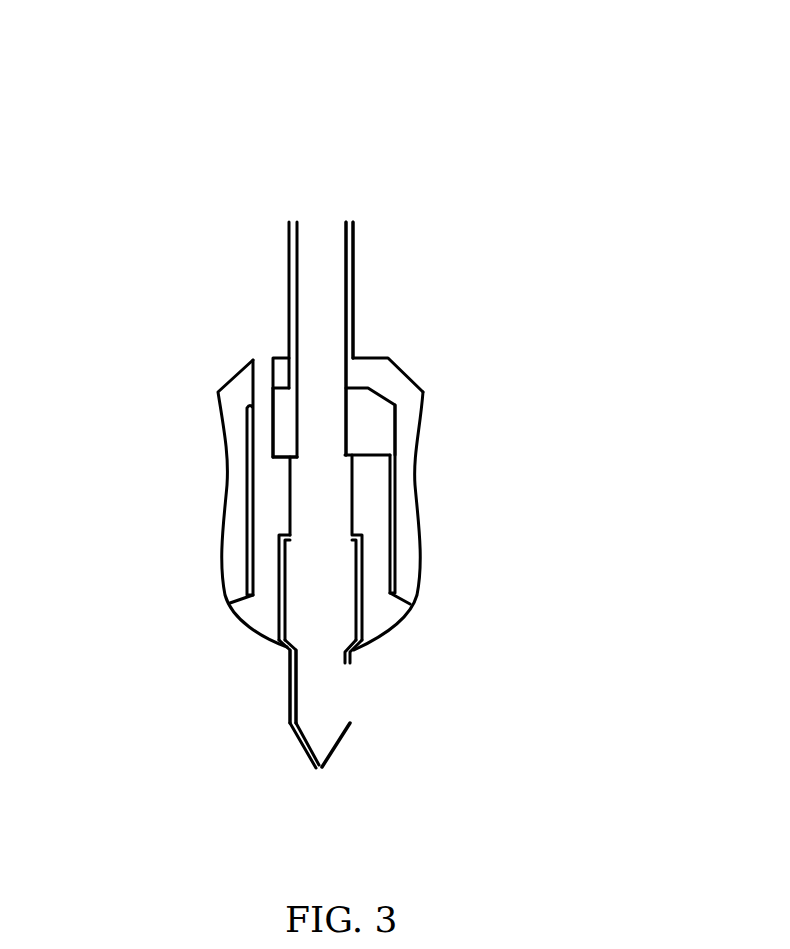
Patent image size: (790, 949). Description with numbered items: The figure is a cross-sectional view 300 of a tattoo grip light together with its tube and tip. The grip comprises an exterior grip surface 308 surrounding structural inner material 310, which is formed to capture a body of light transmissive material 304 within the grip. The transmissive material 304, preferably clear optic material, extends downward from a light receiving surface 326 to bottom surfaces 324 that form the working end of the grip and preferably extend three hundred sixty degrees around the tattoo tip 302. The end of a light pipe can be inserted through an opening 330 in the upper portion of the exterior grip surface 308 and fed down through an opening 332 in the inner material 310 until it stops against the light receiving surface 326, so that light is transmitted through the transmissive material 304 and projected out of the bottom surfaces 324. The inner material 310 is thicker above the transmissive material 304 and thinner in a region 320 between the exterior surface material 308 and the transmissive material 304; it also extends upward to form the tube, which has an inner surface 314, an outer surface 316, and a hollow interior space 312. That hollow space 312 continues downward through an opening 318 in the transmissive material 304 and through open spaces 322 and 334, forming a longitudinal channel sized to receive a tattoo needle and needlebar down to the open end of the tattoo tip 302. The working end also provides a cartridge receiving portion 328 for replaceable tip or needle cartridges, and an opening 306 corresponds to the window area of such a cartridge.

The cross-sectional view 300 is at (493, 137).
The tattoo tip 302 is at (350, 722).
The light transmissive material 304 is at (257, 617).
The opening 306 is at (348, 697).
The exterior grip surface 308 is at (232, 553).
The structural inner material 310 is at (285, 427).
The hollow interior space 312 is at (324, 253).
The inner surface 314 is at (344, 295).
The outer surface 316 is at (351, 327).
The opening 318 is at (324, 488).
The region 320 is at (248, 512).
The open space 322 is at (423, 392).
The bottom surfaces 324 is at (250, 632).
The light receiving surface 326 is at (267, 455).
The cartridge receiving portion 328 is at (282, 587).
The opening 330 is at (262, 357).
The opening 332 is at (262, 398).
The open space 334 is at (318, 742).